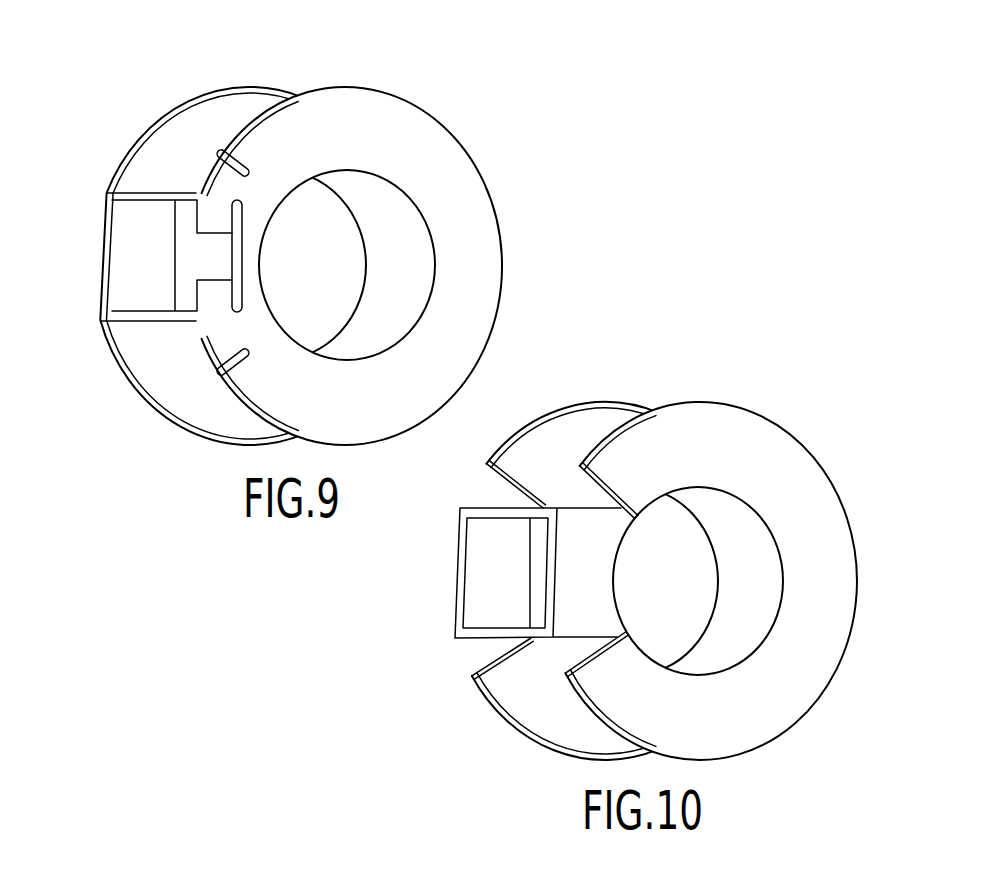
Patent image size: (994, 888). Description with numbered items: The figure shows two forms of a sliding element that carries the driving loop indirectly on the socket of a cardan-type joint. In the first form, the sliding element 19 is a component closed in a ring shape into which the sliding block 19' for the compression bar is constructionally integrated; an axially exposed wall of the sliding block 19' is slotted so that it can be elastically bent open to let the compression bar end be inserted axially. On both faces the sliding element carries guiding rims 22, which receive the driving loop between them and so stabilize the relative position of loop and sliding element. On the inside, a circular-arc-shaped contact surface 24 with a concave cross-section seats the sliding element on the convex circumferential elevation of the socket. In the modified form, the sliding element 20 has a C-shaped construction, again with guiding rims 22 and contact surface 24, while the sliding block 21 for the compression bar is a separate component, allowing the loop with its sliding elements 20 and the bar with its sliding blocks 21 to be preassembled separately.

In FIG. 9, the sliding element 19 is at (301, 241).
In FIG. 9, the sliding block 19' is at (140, 257).
In FIG. 10, the sliding element 20 is at (767, 409).
In FIG. 10, the sliding block 21 is at (458, 595).
In FIG. 9, the guiding rims 22 is at (257, 86).
In FIG. 10, the guiding rims 22 is at (686, 402).
In FIG. 9, the contact surface 24 is at (392, 218).
In FIG. 10, the contact surface 24 is at (747, 536).